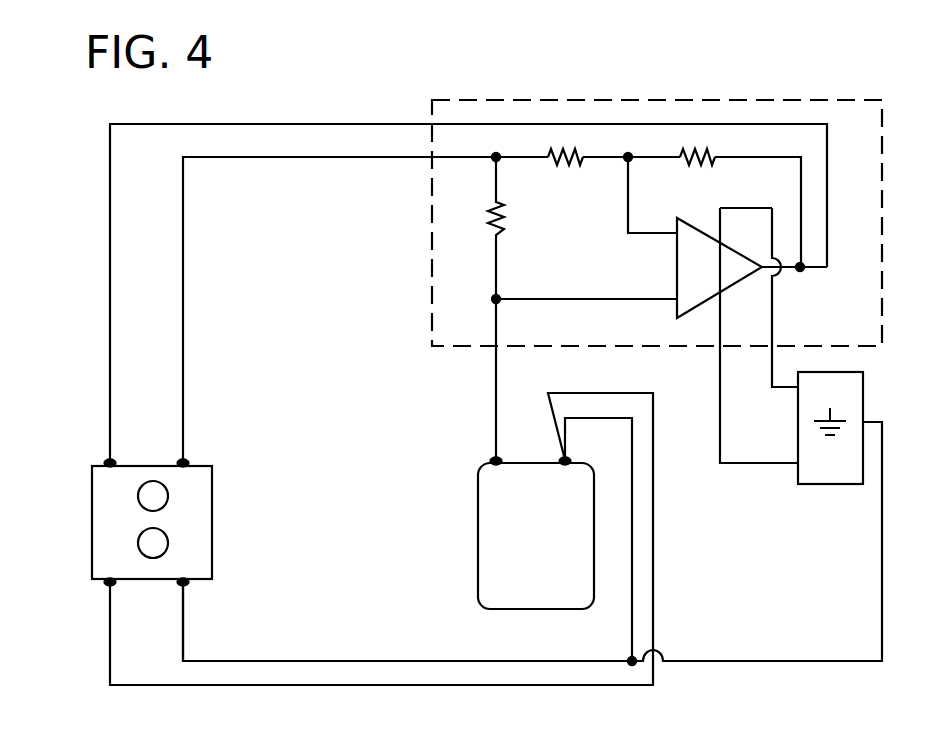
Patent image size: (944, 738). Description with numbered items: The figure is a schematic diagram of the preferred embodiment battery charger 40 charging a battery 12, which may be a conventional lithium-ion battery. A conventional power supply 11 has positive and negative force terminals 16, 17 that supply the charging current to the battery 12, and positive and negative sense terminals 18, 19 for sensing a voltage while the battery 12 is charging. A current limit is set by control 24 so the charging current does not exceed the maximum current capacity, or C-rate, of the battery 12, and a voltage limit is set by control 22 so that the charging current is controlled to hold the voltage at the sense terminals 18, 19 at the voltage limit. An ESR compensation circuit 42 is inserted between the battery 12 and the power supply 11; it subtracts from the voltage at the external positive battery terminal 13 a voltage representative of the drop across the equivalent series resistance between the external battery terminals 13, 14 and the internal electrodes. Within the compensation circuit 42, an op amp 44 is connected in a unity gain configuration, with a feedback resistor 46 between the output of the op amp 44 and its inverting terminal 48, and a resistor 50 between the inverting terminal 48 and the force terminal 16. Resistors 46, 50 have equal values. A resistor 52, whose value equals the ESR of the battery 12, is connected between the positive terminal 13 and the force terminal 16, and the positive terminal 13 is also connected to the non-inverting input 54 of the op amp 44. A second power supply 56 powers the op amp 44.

The power supply 11 is at (212, 515).
The battery 12 is at (532, 609).
The positive battery terminal 13 is at (493, 458).
The negative battery terminal 14 is at (568, 458).
The positive force terminal 16 is at (181, 460).
The negative force terminal 17 is at (181, 584).
The positive sense terminal 18 is at (108, 460).
The negative sense terminal 19 is at (109, 584).
The voltage limit control 22 is at (138, 496).
The current limit control 24 is at (138, 543).
The battery charger 40 is at (95, 146).
The ESR compensation circuit 42 is at (730, 100).
The op amp 44 is at (677, 258).
The feedback resistor 46 is at (698, 152).
The inverting terminal 48 is at (677, 238).
The resistor 50 is at (566, 152).
The resistor 52 is at (490, 214).
The non-inverting input 54 is at (677, 304).
The second power supply 56 is at (863, 396).